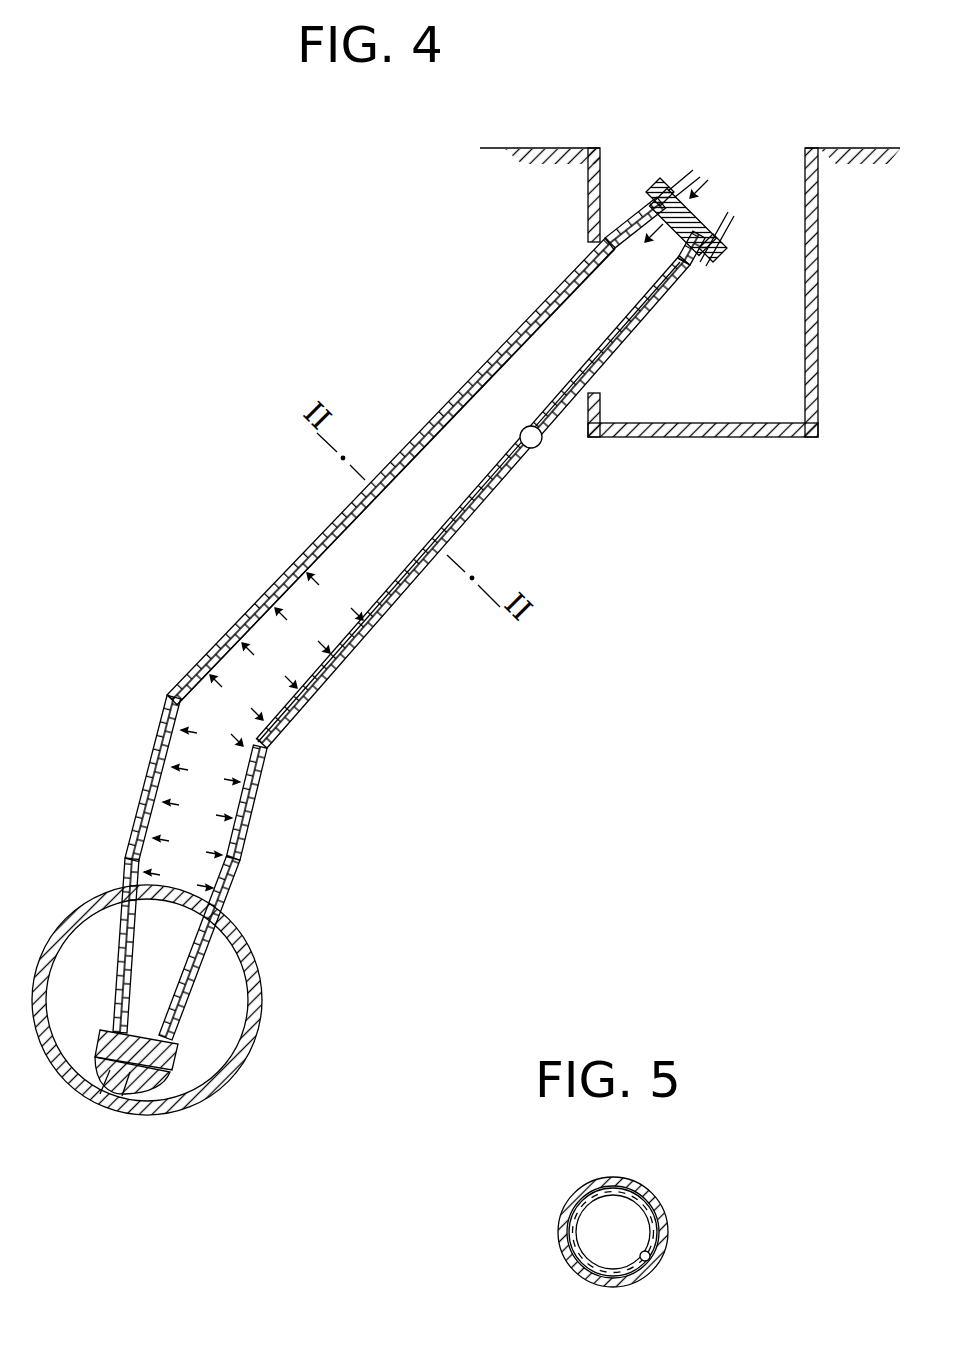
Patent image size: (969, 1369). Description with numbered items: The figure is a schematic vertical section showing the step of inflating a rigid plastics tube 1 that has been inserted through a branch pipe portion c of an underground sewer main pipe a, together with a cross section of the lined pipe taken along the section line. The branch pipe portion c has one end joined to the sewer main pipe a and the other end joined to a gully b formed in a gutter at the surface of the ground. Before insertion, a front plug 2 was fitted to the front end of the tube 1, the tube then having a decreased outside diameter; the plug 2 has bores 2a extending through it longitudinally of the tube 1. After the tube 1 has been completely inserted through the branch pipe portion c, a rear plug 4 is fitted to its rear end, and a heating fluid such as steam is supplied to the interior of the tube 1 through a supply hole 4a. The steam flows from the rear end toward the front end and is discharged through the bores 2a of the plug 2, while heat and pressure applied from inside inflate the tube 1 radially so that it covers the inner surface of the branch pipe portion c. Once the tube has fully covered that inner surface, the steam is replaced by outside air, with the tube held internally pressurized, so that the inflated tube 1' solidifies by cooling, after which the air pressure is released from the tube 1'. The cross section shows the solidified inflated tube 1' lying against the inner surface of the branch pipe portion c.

In FIG. 4, the rigid plastics tube 1 is at (719, 222).
In FIG. 4, the inflated tube 1' is at (428, 495).
In FIG. 5, the inflated tube 1' is at (660, 1233).
In FIG. 4, the front plug 2 is at (153, 1077).
In FIG. 4, the bores 2a is at (120, 1098).
In FIG. 4, the rear plug 4 is at (724, 262).
In FIG. 4, the supply hole 4a is at (700, 212).
In FIG. 4, the sewer main pipe a is at (262, 966).
In FIG. 4, the gully b is at (818, 360).
In FIG. 4, the branch pipe portion c is at (403, 603).
In FIG. 5, the branch pipe portion c is at (650, 1205).